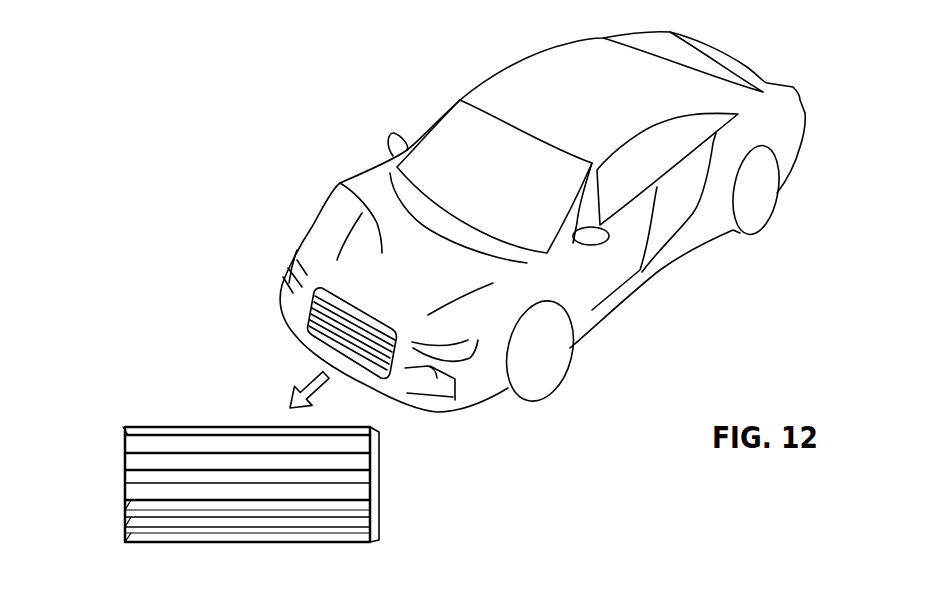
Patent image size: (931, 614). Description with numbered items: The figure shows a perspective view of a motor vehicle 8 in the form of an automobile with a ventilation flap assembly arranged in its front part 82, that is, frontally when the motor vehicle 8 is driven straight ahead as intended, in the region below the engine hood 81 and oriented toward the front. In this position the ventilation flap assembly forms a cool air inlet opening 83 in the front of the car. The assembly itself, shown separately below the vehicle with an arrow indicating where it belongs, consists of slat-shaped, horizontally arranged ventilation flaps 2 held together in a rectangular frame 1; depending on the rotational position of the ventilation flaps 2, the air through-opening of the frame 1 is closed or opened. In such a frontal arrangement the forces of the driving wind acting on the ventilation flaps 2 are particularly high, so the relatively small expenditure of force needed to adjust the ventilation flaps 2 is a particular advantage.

The motor vehicle 8 is at (485, 261).
The engine hood 81 is at (345, 185).
The front part 82 is at (437, 378).
The cool air inlet opening 83 is at (307, 303).
The frame 1 is at (242, 487).
The ventilation flap 2 is at (137, 446).